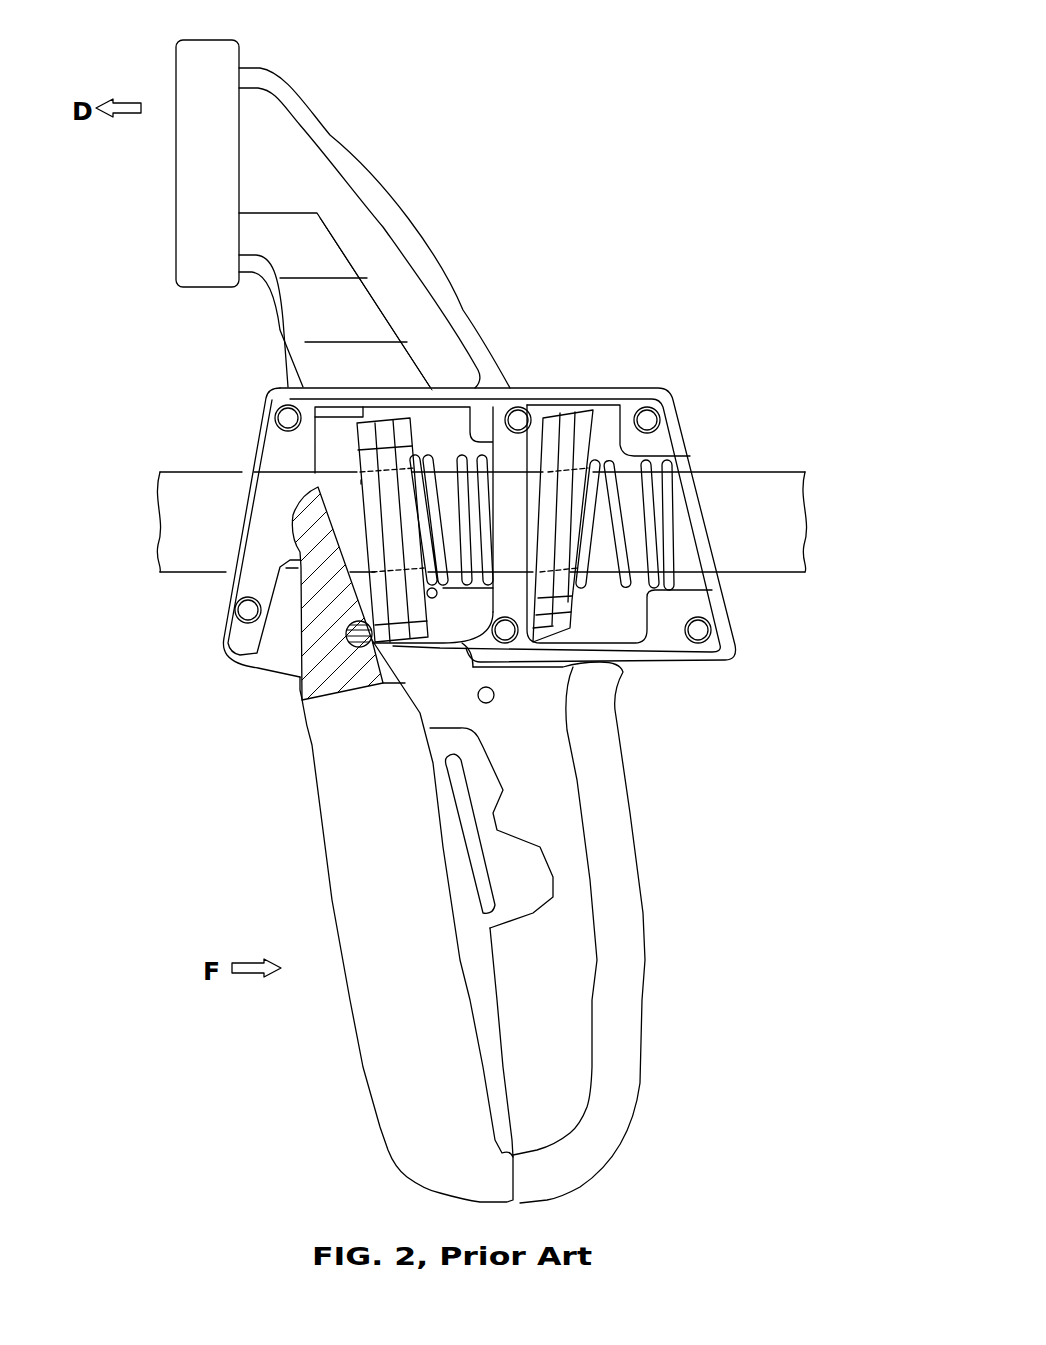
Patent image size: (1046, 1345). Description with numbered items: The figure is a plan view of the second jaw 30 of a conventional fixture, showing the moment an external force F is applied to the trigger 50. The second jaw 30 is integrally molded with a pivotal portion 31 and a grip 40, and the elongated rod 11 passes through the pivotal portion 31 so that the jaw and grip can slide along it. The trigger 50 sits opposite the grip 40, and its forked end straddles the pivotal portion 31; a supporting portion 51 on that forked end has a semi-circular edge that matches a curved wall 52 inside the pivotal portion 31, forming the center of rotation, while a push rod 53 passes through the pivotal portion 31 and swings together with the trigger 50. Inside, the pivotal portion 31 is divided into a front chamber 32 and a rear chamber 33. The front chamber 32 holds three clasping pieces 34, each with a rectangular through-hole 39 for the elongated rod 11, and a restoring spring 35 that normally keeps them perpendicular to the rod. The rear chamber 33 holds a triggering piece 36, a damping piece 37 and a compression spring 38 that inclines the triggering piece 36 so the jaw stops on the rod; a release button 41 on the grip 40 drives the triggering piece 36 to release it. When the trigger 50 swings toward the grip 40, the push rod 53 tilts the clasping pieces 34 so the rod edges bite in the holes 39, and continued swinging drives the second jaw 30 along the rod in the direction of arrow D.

The elongated rod 11 is at (742, 483).
The second jaw 30 is at (352, 152).
The pivotal portion 31 is at (722, 655).
The front chamber 32 is at (470, 432).
The rear chamber 33 is at (613, 425).
The clasping piece 34 is at (405, 422).
The restoring spring 35 is at (428, 455).
The triggering piece 36 is at (565, 425).
The damping piece 37 is at (588, 428).
The compression spring 38 is at (645, 497).
The rectangular through-hole 39 is at (362, 482).
The grip 40 is at (620, 903).
The release button 41 is at (505, 870).
The trigger 50 is at (402, 1002).
The supporting portion 51 is at (307, 530).
The curved wall 52 is at (308, 510).
The push rod 53 is at (364, 640).